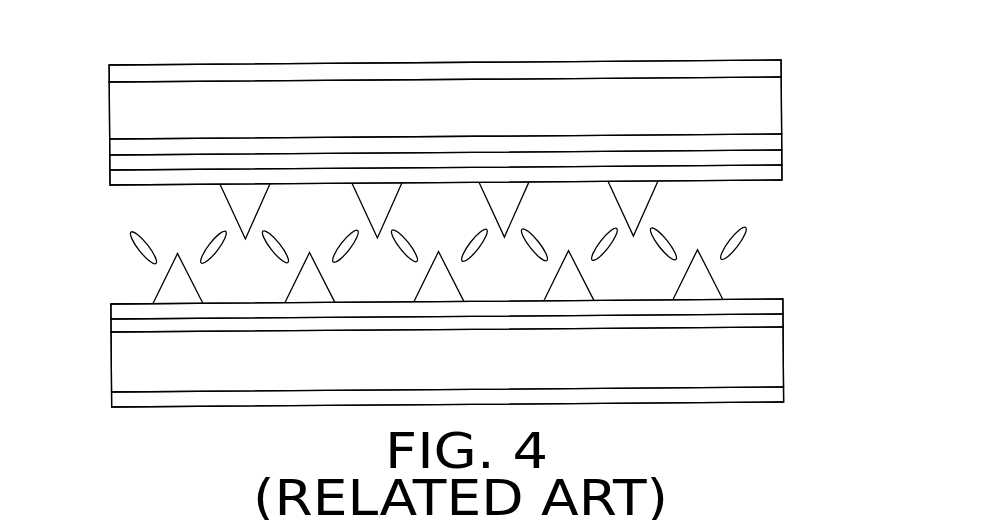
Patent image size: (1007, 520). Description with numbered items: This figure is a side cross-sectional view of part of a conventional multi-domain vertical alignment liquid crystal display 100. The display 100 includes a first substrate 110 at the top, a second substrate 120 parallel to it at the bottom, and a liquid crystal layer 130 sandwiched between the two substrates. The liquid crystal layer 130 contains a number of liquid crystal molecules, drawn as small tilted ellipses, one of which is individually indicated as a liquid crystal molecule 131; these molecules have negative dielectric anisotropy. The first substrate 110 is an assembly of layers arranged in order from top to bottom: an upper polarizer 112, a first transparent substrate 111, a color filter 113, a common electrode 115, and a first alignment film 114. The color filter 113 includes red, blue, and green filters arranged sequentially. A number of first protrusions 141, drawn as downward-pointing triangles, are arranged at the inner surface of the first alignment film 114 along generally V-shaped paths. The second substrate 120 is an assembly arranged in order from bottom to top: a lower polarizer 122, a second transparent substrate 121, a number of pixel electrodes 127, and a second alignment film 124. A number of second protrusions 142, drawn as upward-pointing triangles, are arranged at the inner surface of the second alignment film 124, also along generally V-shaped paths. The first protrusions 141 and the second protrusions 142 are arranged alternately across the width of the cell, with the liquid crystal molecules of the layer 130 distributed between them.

The multi-domain vertical alignment liquid crystal display 100 is at (471, 42).
The first substrate 110 is at (102, 62).
The first transparent substrate 111 is at (757, 102).
The upper polarizer 112 is at (772, 66).
The color filter 113 is at (772, 140).
The first alignment film 114 is at (772, 173).
The common electrode 115 is at (772, 158).
The second substrate 120 is at (102, 303).
The second transparent substrate 121 is at (770, 360).
The lower polarizer 122 is at (770, 397).
The second alignment film 124 is at (760, 308).
The pixel electrodes 127 is at (773, 322).
The liquid crystal layer 130 is at (123, 206).
The diffusion bead 131 is at (665, 243).
The first protrusions 141 is at (635, 193).
The second protrusions 142 is at (700, 280).